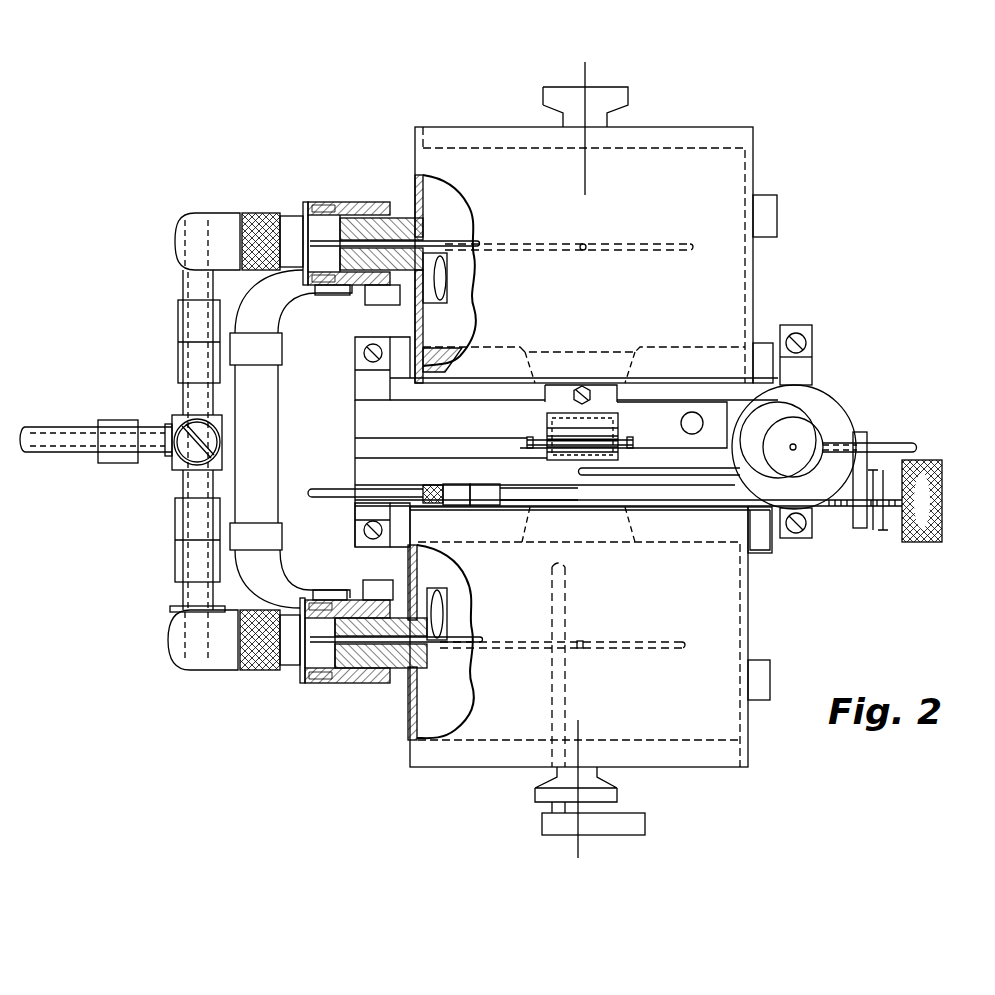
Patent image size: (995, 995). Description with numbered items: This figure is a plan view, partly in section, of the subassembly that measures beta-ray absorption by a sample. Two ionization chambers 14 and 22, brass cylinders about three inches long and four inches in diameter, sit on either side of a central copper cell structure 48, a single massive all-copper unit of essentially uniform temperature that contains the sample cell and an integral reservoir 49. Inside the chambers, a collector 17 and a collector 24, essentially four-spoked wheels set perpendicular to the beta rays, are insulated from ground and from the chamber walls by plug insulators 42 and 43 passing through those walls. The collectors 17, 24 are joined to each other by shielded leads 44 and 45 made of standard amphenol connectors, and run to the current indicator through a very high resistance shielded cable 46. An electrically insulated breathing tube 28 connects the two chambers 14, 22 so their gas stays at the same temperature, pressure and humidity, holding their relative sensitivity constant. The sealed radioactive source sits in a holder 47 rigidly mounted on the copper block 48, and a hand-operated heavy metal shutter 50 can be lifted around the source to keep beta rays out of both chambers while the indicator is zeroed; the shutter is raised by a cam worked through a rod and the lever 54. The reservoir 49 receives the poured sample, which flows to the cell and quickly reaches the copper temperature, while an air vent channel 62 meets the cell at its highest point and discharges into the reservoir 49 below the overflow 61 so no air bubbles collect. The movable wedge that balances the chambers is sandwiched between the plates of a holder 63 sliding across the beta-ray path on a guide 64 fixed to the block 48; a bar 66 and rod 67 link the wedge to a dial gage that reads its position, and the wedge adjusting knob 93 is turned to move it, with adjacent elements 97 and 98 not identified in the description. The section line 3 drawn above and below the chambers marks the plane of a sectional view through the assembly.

The section line 3- 3 is at (563, 72).
The ionization chamber 14 is at (754, 608).
The collector 17 is at (480, 645).
The ionization chamber 22 is at (760, 163).
The collector 24 is at (457, 243).
The breathing tube 28 is at (292, 418).
The plug insulator 42 is at (355, 688).
The plug insulator 43 is at (369, 200).
The shielded lead 44 is at (181, 598).
The shielded lead 45 is at (183, 293).
The shielded cable 46 is at (55, 428).
The holder 47 is at (631, 439).
The copper cell structure 48 is at (352, 410).
The reservoir 49 is at (805, 436).
The shutter 50 is at (548, 433).
The lever 54 is at (646, 826).
The overflow 61 is at (898, 442).
The air vent channel 62 is at (658, 472).
The holder 63 is at (490, 488).
The guide 64 is at (690, 506).
The bar 66 is at (438, 486).
The rod 67 is at (324, 500).
The wedge adjusting knob 93 is at (944, 490).
The bracket plate 97 is at (876, 522).
The bar 98 is at (852, 512).